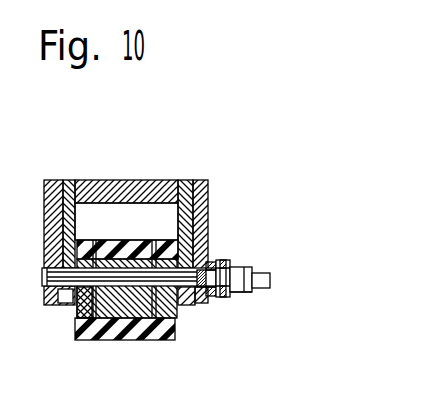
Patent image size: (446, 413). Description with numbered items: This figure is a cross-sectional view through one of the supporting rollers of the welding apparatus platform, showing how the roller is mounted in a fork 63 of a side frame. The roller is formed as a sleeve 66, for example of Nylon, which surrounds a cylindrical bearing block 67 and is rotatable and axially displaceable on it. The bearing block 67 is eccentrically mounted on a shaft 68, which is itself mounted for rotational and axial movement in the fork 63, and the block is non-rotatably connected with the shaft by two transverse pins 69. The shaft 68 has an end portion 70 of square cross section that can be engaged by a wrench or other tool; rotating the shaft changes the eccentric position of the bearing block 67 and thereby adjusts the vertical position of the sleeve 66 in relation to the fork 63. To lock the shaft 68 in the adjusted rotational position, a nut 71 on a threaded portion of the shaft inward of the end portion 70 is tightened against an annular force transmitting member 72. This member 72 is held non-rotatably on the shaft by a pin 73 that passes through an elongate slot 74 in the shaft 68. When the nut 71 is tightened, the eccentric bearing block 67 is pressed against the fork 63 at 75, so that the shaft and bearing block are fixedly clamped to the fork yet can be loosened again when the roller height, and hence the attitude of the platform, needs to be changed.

The fork 63 is at (203, 202).
The sleeve 66 is at (170, 338).
The bearing block 67 is at (178, 318).
The shaft 68 is at (41, 272).
The transverse pins 69 is at (155, 241).
The end portion 70 is at (270, 279).
The nut 71 is at (247, 299).
The annular force transmitting member 72 is at (228, 259).
The pin 73 is at (215, 298).
The elongate slot 74 is at (211, 262).
The pressing location 75 is at (182, 302).